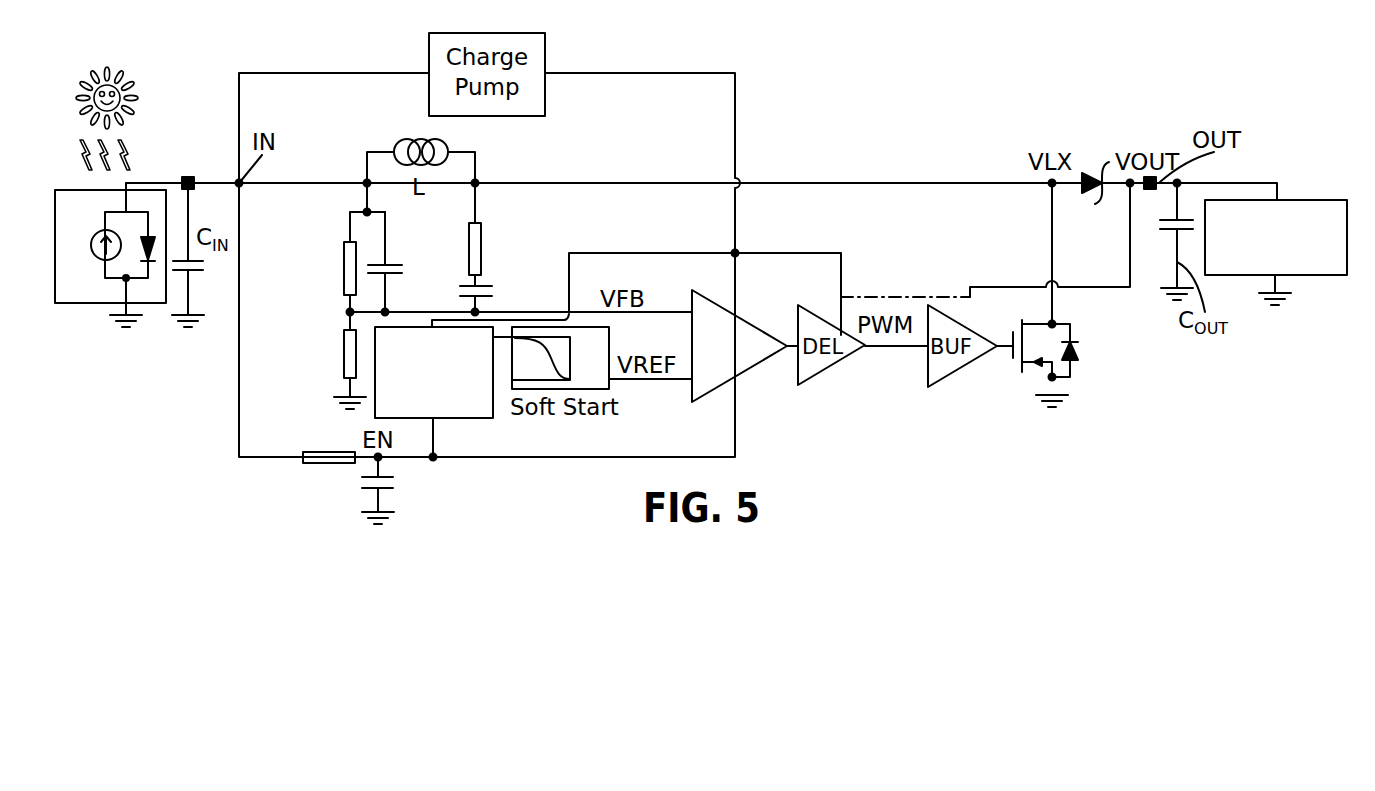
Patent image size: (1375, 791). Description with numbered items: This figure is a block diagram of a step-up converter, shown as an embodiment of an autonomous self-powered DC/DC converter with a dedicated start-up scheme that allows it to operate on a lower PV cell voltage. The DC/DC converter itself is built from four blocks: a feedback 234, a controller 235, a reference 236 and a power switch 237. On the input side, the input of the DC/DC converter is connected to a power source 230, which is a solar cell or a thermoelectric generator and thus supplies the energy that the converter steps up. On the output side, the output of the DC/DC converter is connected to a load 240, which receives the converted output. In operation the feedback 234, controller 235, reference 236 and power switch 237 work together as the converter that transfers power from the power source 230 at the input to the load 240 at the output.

The power source 230 is at (73, 305).
The feedback 234 is at (343, 220).
The controller 235 is at (752, 370).
The reference 236 is at (472, 420).
The power switch 237 is at (1072, 365).
The load 240 is at (1318, 197).